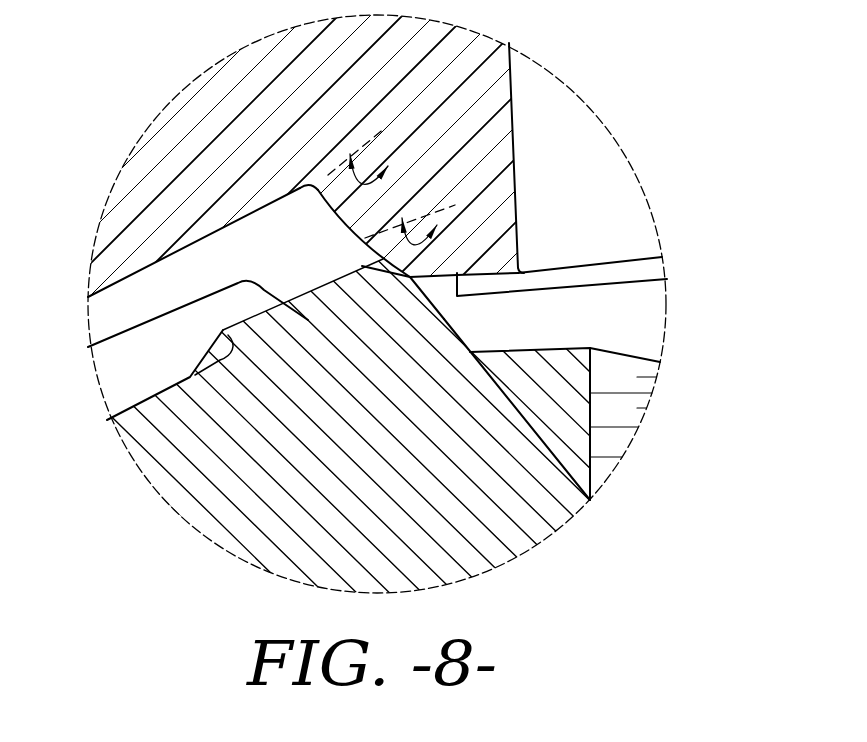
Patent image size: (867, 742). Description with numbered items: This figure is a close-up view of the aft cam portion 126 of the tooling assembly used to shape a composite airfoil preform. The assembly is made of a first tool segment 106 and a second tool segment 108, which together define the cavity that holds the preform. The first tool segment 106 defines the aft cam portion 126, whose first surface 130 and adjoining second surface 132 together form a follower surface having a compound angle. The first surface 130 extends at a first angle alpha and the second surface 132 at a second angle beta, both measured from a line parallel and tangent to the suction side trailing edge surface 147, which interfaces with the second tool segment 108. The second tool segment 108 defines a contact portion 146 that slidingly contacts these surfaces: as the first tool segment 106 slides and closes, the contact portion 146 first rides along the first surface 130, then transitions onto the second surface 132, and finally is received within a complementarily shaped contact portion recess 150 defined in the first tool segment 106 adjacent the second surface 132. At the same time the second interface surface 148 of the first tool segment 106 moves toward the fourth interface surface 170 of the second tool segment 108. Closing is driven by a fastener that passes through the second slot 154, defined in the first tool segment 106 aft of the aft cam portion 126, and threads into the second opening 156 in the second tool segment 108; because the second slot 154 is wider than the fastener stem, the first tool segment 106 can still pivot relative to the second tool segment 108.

The first tool segment 106 is at (163, 163).
The second tool segment 108 is at (197, 488).
The aft cam portion 126 is at (414, 183).
The first surface 130 is at (406, 274).
The second surface 132 is at (342, 236).
The contact portion 146 is at (376, 269).
The suction side trailing edge surface 147 is at (167, 283).
The second interface surface 148 is at (462, 298).
The contact portion recess 150 is at (303, 184).
The second slot 154 is at (562, 142).
The second opening 156 is at (623, 383).
The fourth interface surface 170 is at (565, 347).